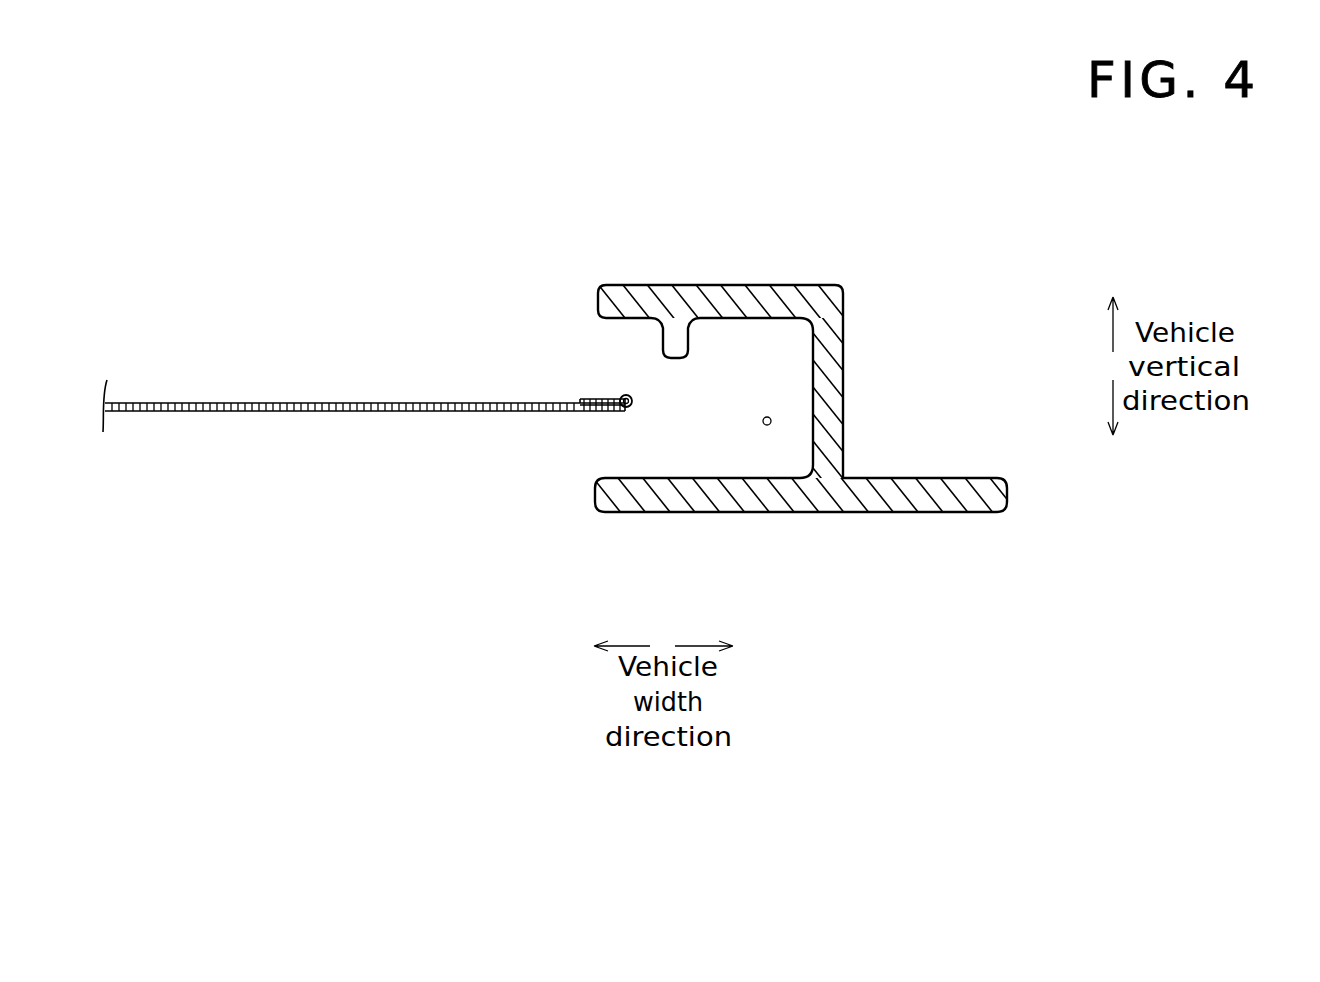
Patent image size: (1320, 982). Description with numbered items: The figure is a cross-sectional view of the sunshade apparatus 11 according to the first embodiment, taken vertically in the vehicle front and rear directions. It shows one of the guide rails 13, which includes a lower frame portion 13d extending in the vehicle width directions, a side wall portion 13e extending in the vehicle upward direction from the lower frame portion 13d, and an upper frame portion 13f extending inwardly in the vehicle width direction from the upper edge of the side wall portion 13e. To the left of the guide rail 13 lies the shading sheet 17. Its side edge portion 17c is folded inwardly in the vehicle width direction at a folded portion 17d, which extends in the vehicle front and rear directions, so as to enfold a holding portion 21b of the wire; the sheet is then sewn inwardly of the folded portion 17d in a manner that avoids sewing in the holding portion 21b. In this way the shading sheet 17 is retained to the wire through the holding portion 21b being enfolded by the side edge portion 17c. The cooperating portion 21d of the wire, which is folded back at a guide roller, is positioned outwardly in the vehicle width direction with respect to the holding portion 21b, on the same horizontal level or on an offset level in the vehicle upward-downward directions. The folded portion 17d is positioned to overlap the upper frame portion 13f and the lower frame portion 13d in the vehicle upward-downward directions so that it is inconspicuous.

The sunshade apparatus 11 is at (260, 226).
The guide rail 13 is at (876, 280).
The lower frame portion 13d is at (742, 492).
The side wall portion 13e is at (828, 412).
The upper frame portion 13f is at (680, 302).
The shading sheet 17 is at (361, 388).
The side edge portion 17c is at (590, 392).
The folded portion 17d is at (652, 408).
The holding portion 21b is at (621, 396).
The cooperating portion 21d is at (770, 425).